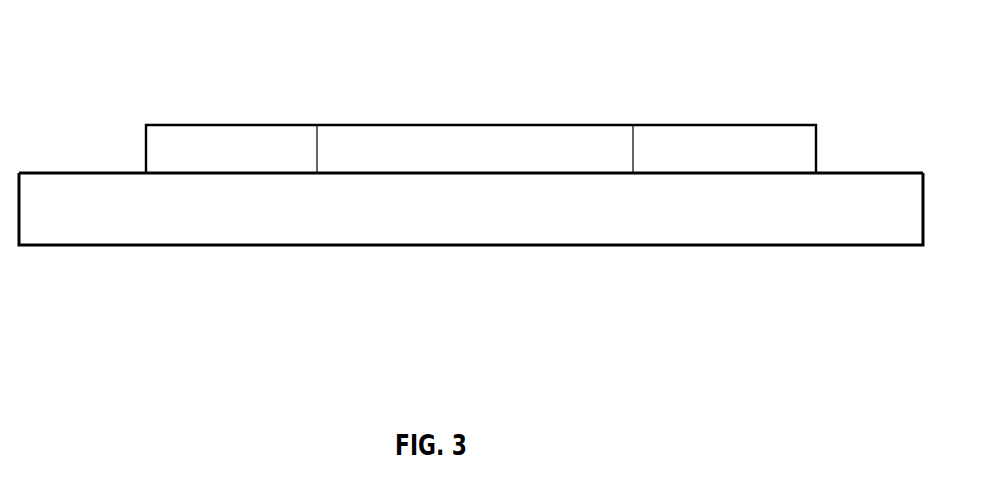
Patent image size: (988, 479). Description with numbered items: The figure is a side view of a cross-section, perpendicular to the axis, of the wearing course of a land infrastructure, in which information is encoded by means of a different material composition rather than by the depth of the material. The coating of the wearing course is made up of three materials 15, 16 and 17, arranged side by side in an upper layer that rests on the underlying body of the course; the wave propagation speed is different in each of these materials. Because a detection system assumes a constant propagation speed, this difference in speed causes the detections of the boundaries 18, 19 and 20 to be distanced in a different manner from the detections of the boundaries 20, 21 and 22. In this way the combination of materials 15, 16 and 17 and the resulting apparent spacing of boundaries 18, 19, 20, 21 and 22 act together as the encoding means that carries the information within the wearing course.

The coating material 15 is at (207, 155).
The coating material 16 is at (450, 167).
The coating material 17 is at (682, 152).
The boundary 18 is at (287, 125).
The boundary 19 is at (568, 125).
The boundary 20 is at (742, 125).
The boundary 21 is at (538, 173).
The boundary 22 is at (760, 173).